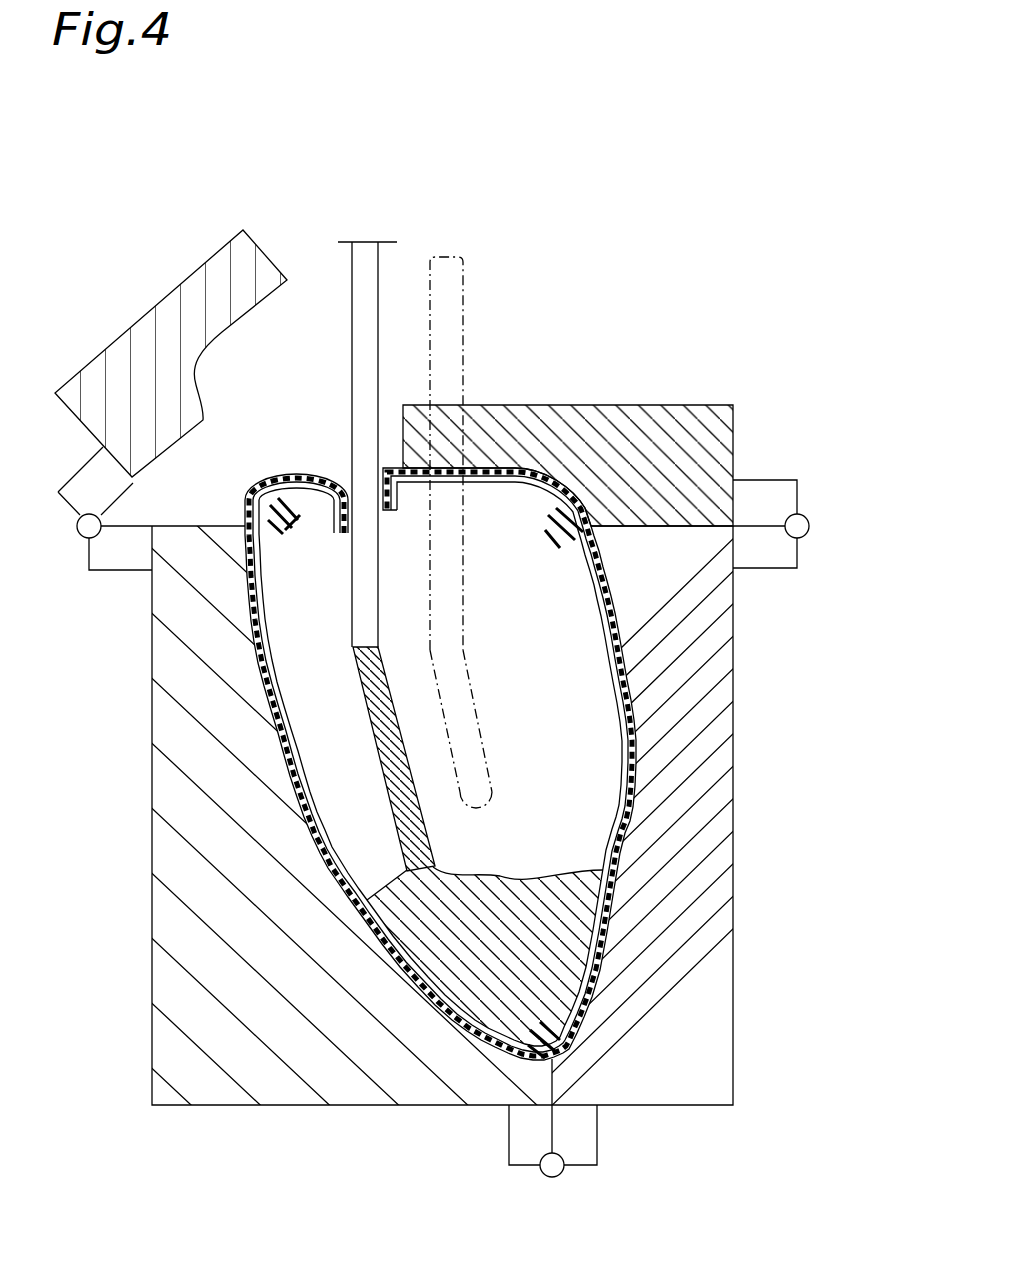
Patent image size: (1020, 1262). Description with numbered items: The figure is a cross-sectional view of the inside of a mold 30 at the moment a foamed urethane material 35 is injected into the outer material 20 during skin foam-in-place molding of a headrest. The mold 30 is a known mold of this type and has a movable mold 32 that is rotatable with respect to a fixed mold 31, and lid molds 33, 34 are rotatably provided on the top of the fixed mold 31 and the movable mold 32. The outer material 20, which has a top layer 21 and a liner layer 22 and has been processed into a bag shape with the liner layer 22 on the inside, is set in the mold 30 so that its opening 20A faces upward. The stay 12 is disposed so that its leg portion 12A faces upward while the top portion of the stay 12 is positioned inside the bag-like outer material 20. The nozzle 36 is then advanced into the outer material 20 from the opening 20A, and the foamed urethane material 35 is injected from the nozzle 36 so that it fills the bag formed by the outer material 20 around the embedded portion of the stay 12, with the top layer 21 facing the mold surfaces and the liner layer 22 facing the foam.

The stay 12 is at (510, 479).
The leg portion 12A is at (465, 310).
The outer material 20 is at (556, 703).
The opening 20A is at (342, 468).
The top layer 21 is at (630, 727).
The liner layer 22 is at (640, 697).
The mold 30 is at (453, 685).
The fixed mold 31 is at (703, 945).
The movable mold 32 is at (178, 935).
The lid mold 33 is at (733, 427).
The lid mold 34 is at (167, 307).
The foamed urethane material 35 is at (612, 890).
The nozzle 36 is at (355, 307).